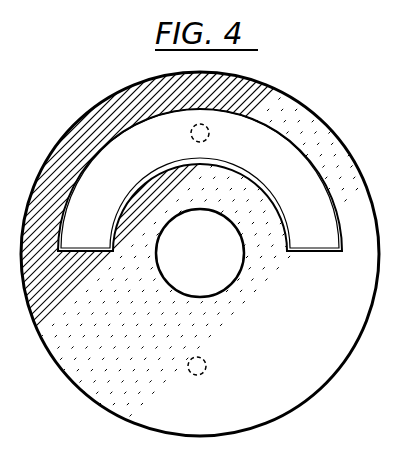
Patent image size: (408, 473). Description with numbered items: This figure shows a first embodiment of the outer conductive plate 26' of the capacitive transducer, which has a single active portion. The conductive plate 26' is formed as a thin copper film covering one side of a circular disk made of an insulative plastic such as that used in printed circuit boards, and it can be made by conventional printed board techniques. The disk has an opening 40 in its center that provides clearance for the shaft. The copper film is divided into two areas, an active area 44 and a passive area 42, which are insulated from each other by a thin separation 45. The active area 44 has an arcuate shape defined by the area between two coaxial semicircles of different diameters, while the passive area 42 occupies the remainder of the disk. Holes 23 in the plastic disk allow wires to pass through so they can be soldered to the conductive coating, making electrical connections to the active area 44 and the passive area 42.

The conductive plate 26' is at (189, 236).
The holes 23 is at (207, 140).
The opening 40 is at (177, 294).
The passive area 42 is at (244, 345).
The active area 44 is at (312, 207).
The separation 45 is at (311, 254).